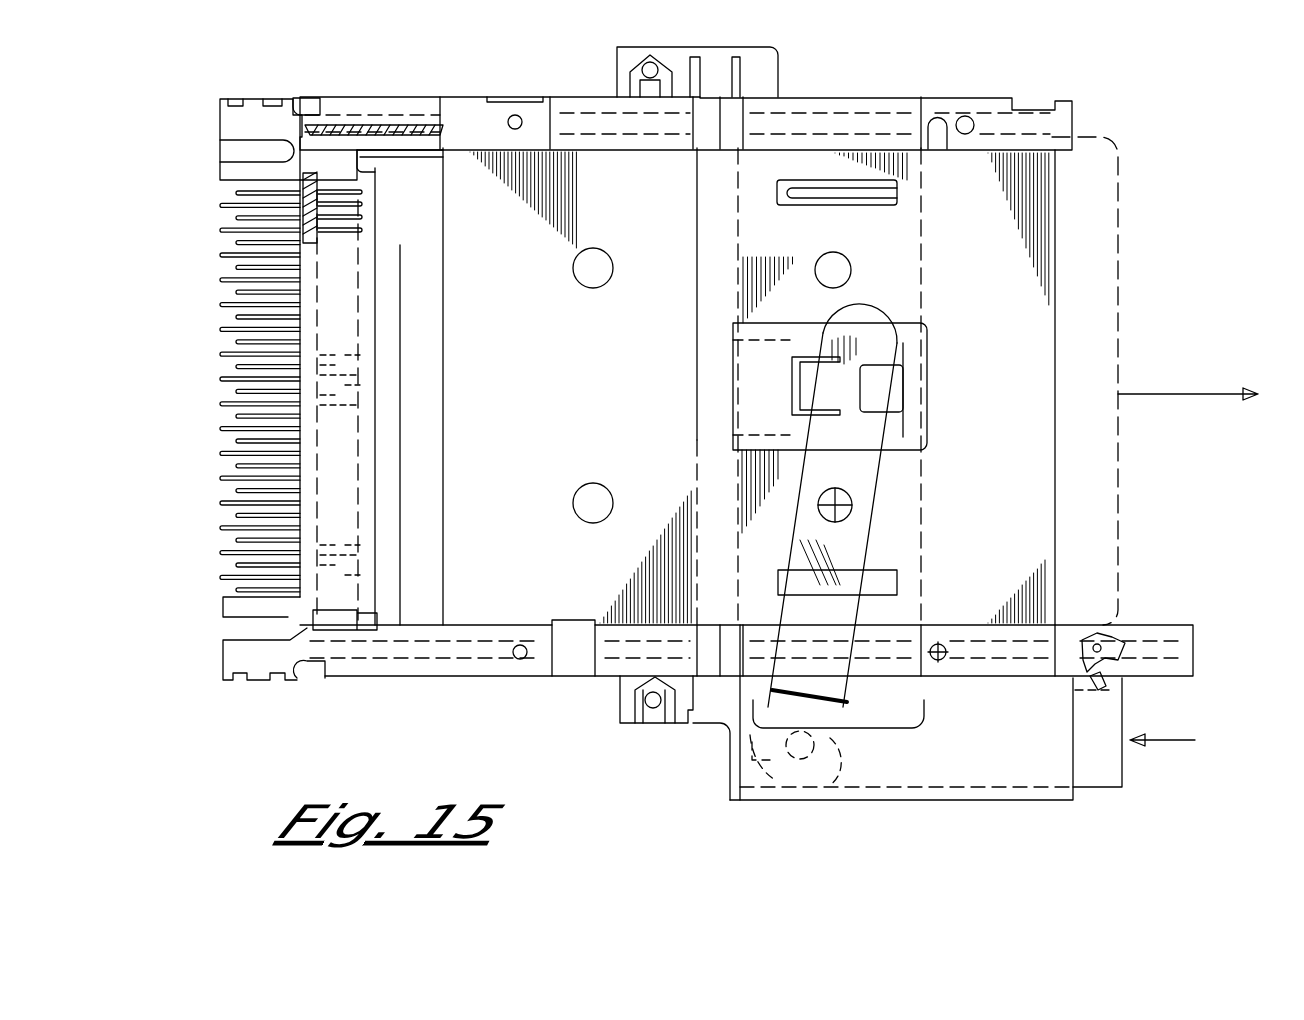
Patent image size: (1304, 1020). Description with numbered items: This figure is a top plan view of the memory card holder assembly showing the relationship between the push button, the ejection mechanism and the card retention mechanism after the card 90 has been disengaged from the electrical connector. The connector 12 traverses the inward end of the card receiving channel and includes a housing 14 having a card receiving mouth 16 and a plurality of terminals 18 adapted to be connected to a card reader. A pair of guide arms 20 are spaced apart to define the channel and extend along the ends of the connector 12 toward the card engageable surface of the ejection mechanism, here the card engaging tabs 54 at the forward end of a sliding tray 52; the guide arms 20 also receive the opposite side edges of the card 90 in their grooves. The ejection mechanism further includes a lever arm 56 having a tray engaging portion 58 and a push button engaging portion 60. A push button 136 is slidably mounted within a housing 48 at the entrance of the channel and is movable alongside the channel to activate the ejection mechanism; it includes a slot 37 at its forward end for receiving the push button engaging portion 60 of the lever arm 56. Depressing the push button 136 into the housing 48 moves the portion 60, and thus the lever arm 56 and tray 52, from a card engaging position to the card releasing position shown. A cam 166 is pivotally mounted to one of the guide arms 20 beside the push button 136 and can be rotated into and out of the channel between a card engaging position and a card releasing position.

The electrical connector 12 is at (307, 599).
The housing 14 is at (348, 292).
The card receiving mouth 16 is at (378, 412).
The terminals 18 is at (240, 278).
The guide arms 20 is at (378, 97).
The slot 37 is at (764, 801).
The housing 48 is at (995, 801).
The sliding tray 52 is at (749, 386).
The card engaging tabs 54 is at (362, 157).
The lever arm 56 is at (858, 477).
The tray engaging portion 58 is at (875, 319).
The push button engaging portion 60 is at (836, 802).
The card 90 is at (1118, 258).
The push button 136 is at (1103, 790).
The cam 166 is at (1122, 674).